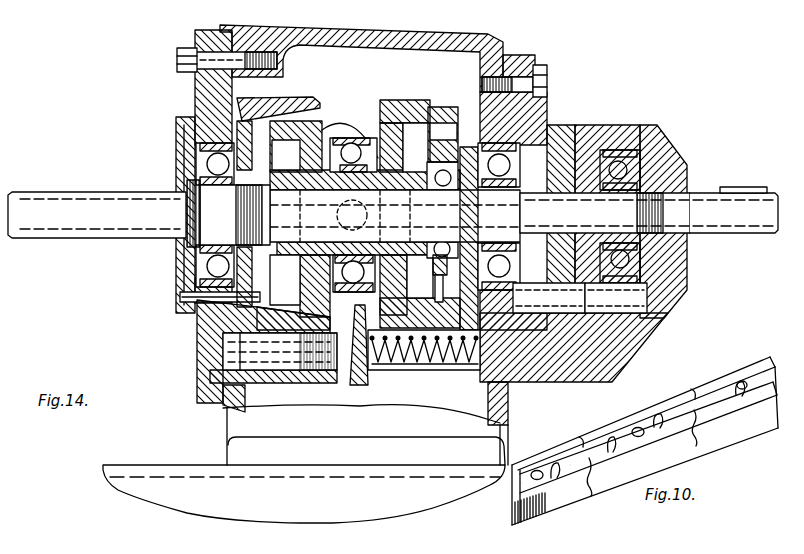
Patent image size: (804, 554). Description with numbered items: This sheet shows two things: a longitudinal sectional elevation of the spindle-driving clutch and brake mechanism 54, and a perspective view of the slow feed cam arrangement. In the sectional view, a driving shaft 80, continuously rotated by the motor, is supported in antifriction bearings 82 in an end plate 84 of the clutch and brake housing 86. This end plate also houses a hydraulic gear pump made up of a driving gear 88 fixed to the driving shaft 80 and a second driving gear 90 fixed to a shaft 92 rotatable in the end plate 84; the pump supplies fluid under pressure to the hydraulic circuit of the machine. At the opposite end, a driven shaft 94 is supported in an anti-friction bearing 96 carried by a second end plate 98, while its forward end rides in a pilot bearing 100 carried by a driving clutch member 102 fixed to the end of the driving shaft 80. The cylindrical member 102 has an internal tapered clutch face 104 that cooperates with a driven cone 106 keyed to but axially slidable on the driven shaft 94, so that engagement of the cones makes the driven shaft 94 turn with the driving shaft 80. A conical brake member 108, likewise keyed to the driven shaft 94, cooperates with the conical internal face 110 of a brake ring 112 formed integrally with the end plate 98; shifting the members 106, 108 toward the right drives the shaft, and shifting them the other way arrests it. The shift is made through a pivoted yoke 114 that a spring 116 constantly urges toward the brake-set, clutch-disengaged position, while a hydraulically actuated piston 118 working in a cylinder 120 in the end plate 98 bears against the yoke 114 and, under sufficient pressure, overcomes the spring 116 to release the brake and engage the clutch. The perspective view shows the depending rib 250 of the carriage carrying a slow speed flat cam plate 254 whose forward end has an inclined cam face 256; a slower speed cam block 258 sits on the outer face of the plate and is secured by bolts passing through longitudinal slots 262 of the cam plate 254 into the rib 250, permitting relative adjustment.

In FIG. 14, the clutch and brake mechanism 54 is at (468, 37).
In FIG. 14, the driving shaft 80 is at (700, 197).
In FIG. 14, the antifriction bearings 82 is at (517, 153).
In FIG. 14, the end plate 84 is at (588, 133).
In FIG. 14, the clutch and brake housing 86 is at (492, 42).
In FIG. 14, the driving gear 88 is at (577, 140).
In FIG. 14, the driving gear 90 is at (632, 340).
In FIG. 14, the shaft 92 is at (686, 272).
In FIG. 14, the driven shaft 94 is at (78, 200).
In FIG. 14, the anti-friction bearing 96 is at (196, 148).
In FIG. 14, the second end plate 98 is at (200, 93).
In FIG. 14, the pilot bearing 100 is at (468, 146).
In FIG. 14, the driving clutch member 102 is at (440, 106).
In FIG. 14, the internal tapered clutch face 104 is at (417, 120).
In FIG. 14, the driven cone 106 is at (373, 152).
In FIG. 14, the conical brake member 108 is at (323, 114).
In FIG. 14, the conical internal face 110 is at (283, 117).
In FIG. 14, the brake ring 112 is at (270, 104).
In FIG. 14, the pivoted yoke 114 is at (356, 388).
In FIG. 14, the spring 116 is at (467, 373).
In FIG. 14, the hydraulically actuated piston 118 is at (324, 362).
In FIG. 14, the cylinder 120 is at (210, 402).
In FIG. 14, the rib 250 is at (304, 479).
In FIG. 10, the slow speed flat cam plate 254 is at (622, 476).
In FIG. 10, the inclined cam face 256 is at (533, 512).
In FIG. 10, the slower speed cam block 258 is at (647, 471).
In FIG. 10, the longitudinal slots 262 is at (713, 397).